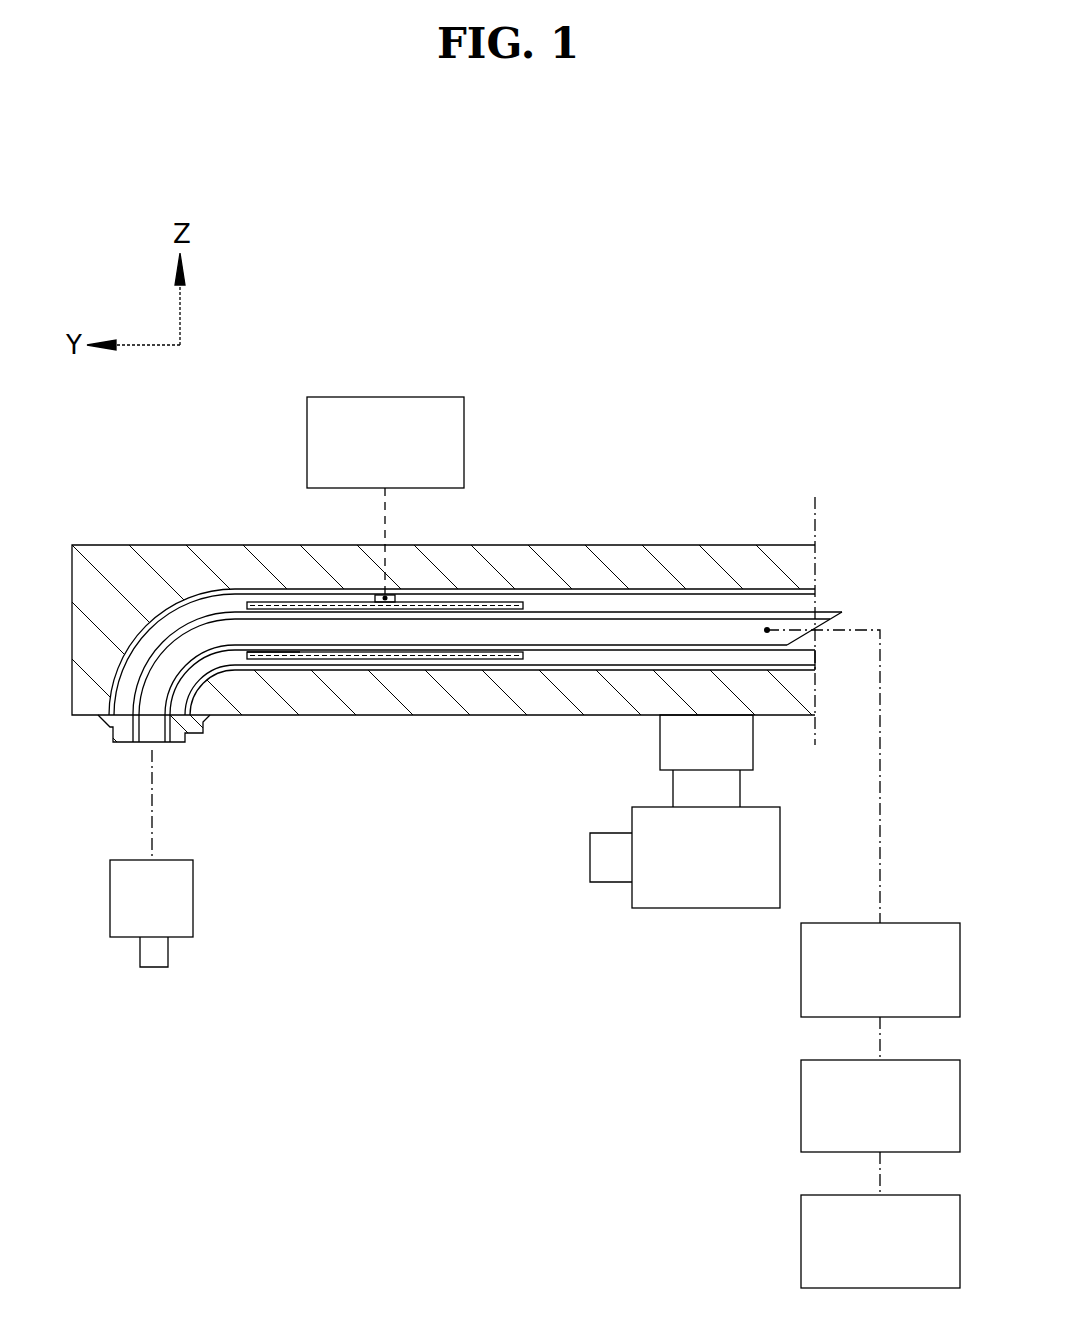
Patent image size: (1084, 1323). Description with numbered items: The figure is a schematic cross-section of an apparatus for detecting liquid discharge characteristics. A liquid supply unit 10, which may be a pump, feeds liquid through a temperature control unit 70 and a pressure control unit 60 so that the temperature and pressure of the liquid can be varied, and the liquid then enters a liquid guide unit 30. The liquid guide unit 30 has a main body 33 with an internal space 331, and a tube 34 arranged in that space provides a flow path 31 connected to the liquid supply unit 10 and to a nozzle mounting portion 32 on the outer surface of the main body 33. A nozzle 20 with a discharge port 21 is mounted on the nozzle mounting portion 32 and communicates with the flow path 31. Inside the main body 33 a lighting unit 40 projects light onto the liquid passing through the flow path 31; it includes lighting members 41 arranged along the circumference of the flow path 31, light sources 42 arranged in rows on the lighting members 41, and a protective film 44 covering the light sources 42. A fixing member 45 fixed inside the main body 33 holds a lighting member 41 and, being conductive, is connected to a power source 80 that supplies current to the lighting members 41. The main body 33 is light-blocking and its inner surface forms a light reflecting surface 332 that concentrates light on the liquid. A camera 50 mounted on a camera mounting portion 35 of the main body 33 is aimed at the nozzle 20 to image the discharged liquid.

The liquid supply unit 10 is at (827, 1248).
The nozzle 20 is at (131, 900).
The discharge port 21 is at (152, 957).
The liquid guide unit 30 is at (463, 672).
The flow path 31 is at (682, 632).
The nozzle mounting portion 32 is at (122, 722).
The main body 33 is at (163, 556).
The tube 34 is at (578, 613).
The camera mounting portion 35 is at (683, 753).
The lighting unit 40 is at (503, 597).
The lighting member 41 is at (353, 659).
The light source 42 is at (513, 659).
The protective film 44 is at (283, 659).
The fixing member 45 is at (393, 598).
The camera 50 is at (660, 895).
The pressure control unit 60 is at (827, 1112).
The temperature control unit 70 is at (827, 977).
The power source 80 is at (329, 438).
The internal space 331 is at (795, 608).
The light reflecting surface 332 is at (232, 589).